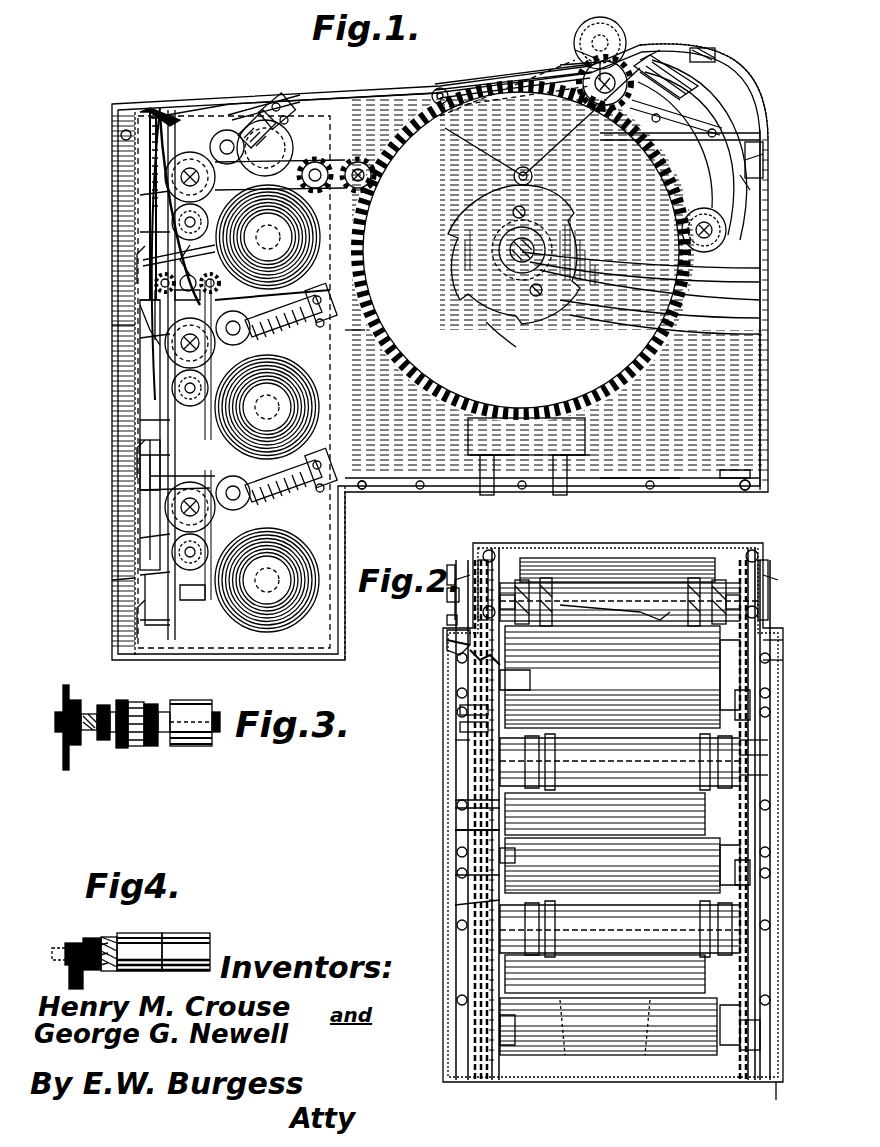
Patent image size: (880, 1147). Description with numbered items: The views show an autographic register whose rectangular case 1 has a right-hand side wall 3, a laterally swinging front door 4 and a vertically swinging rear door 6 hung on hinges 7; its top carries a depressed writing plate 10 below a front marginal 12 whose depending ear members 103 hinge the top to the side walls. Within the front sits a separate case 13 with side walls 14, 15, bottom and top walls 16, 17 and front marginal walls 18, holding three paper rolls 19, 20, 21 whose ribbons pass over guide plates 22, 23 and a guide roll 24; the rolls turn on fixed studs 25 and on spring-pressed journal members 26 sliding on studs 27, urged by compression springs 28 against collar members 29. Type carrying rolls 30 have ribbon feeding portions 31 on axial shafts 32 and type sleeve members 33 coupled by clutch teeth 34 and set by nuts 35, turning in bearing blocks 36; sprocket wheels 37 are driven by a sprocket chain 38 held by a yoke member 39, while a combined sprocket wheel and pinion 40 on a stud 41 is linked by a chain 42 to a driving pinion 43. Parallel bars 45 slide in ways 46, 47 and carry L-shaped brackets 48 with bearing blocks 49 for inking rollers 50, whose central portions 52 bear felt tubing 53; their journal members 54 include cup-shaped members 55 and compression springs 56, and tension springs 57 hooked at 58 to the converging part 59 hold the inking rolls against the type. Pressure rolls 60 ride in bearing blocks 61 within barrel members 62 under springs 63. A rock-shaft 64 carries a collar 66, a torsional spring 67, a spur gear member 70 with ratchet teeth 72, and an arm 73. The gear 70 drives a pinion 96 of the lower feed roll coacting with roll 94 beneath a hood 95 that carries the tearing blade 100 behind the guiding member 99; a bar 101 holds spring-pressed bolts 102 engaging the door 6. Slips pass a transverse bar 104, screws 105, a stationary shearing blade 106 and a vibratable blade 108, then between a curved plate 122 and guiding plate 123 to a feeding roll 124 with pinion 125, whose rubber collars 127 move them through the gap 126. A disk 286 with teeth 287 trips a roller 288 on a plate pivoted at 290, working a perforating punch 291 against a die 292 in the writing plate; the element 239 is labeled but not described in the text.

In FIG. 1, the rectangular case 1 is at (428, 490).
In FIG. 1, the right-hand side wall 3 is at (645, 482).
In FIG. 1, the laterally swinging door 4 is at (112, 326).
In FIG. 1, the vertically swinging door 6 is at (762, 170).
In FIG. 1, the hinges 7 is at (762, 492).
In FIG. 1, the writing plate 10 is at (352, 92).
In FIG. 1, the front marginal 12 is at (180, 96).
In FIG. 2, the front marginal 12 is at (566, 1055).
In FIG. 1, the separate case 13 is at (145, 590).
In FIG. 2, the separate case 13 is at (772, 738).
In FIG. 3, the separate case 13 is at (50, 727).
In FIG. 2, the left-hand side wall 14 is at (455, 874).
In FIG. 3, the left-hand side wall 14 is at (230, 720).
In FIG. 2, the right-hand side wall 15 is at (785, 1090).
In FIG. 2, the bottom wall 16 is at (650, 1058).
In FIG. 3, the bottom wall 16 is at (172, 712).
In FIG. 1, the top wall 17 is at (230, 100).
In FIG. 2, the top wall 17 is at (640, 560).
In FIG. 1, the front marginal walls 18 is at (150, 476).
In FIG. 1, the upper paper carrying roll 19 is at (310, 240).
In FIG. 2, the upper paper carrying roll 19 is at (470, 695).
In FIG. 1, the central paper carrying roll 20 is at (325, 360).
In FIG. 2, the central paper carrying roll 20 is at (455, 860).
In FIG. 1, the lower paper carrying roll 21 is at (230, 600).
In FIG. 2, the lower paper carrying roll 21 is at (500, 1030).
In FIG. 1, the guide plate 22 is at (150, 375).
In FIG. 1, the guide plate 23 is at (143, 262).
In FIG. 1, the guide roll 24 is at (158, 100).
In FIG. 2, the fixed studs 25 is at (500, 675).
In FIG. 2, the spring-pressed journal members 26 is at (783, 852).
In FIG. 2, the studs 27 is at (783, 835).
In FIG. 2, the coiled compression springs 28 is at (768, 628).
In FIG. 2, the collar members 29 is at (738, 787).
In FIG. 1, the type carrying rolls 30 is at (165, 177).
In FIG. 2, the type carrying rolls 30 is at (660, 548).
In FIG. 3, the type carrying rolls 30 is at (130, 750).
In FIG. 2, the cylindrical ribbon feeding portions 31 is at (672, 585).
In FIG. 3, the cylindrical ribbon feeding portions 31 is at (200, 748).
In FIG. 1, the axial shafts 32 is at (172, 180).
In FIG. 2, the axial shafts 32 is at (768, 578).
In FIG. 3, the axial shafts 32 is at (90, 745).
In FIG. 1, the type carrying sleeve members 33 is at (138, 192).
In FIG. 2, the type carrying sleeve members 33 is at (700, 580).
In FIG. 3, the type carrying sleeve members 33 is at (140, 702).
In FIG. 2, the clutch teeth 34 is at (665, 620).
In FIG. 2, the securing nuts 35 is at (508, 555).
In FIG. 2, the bearing blocks 36 is at (490, 605).
In FIG. 3, the bearing blocks 36 is at (58, 736).
In FIG. 2, the sprocket wheels 37 is at (455, 575).
In FIG. 1, the sprocket chain 38 is at (140, 455).
In FIG. 2, the sprocket chain 38 is at (455, 740).
In FIG. 1, the yoke member 39 is at (200, 290).
In FIG. 2, the yoke member 39 is at (460, 710).
In FIG. 1, the combined sprocket wheel and pinion 40 is at (312, 158).
In FIG. 2, the combined sprocket wheel and pinion 40 is at (772, 773).
In FIG. 1, the stud 41 is at (290, 135).
In FIG. 1, the chain 42 is at (258, 110).
In FIG. 2, the chain 42 is at (455, 592).
In FIG. 1, the driving pinion 43 is at (360, 160).
In FIG. 1, the parallel bars 45 is at (112, 580).
In FIG. 2, the parallel bars 45 is at (455, 903).
In FIG. 1, the ways 46 is at (140, 575).
In FIG. 1, the ways 47 is at (140, 300).
In FIG. 1, the L-shaped bracket members 48 is at (140, 258).
In FIG. 1, the bearing blocks 49 is at (140, 232).
In FIG. 2, the bearing blocks 49 is at (447, 645).
In FIG. 4, the bearing blocks 49 is at (70, 945).
In FIG. 1, the inking rollers 50 is at (150, 395).
In FIG. 2, the inking rollers 50 is at (470, 880).
In FIG. 4, the inking rollers 50 is at (200, 936).
In FIG. 2, the central portions 52 is at (455, 800).
In FIG. 2, the felt tubing 53 is at (548, 582).
In FIG. 4, the felt tubing 53 is at (155, 935).
In FIG. 2, the journal members 54 is at (455, 838).
In FIG. 4, the journal members 54 is at (92, 940).
In FIG. 2, the cup-shaped members 55 is at (447, 620).
In FIG. 4, the cup-shaped members 55 is at (122, 940).
In FIG. 2, the coiled compression springs 56 is at (465, 640).
In FIG. 4, the coiled compression springs 56 is at (84, 980).
In FIG. 1, the tension springs 57 is at (130, 112).
In FIG. 2, the tension springs 57 is at (472, 572).
In FIG. 1, the hooks 58 is at (150, 108).
In FIG. 2, the hooks 58 is at (489, 550).
In FIG. 1, the converging part 59 is at (162, 220).
In FIG. 2, the converging part 59 is at (470, 655).
In FIG. 1, the pressure rolls 60 is at (250, 160).
In FIG. 2, the pressure rolls 60 is at (640, 545).
In FIG. 1, the bearing blocks 61 is at (330, 290).
In FIG. 1, the barrel members 62 is at (250, 110).
In FIG. 2, the barrel members 62 is at (765, 545).
In FIG. 1, the coiled compression springs 63 is at (235, 118).
In FIG. 1, the rock-shaft 64 is at (760, 274).
In FIG. 1, the collar 66 is at (760, 326).
In FIG. 1, the torsional spring 67 is at (760, 310).
In FIG. 1, the spur gear member 70 is at (365, 489).
In FIG. 1, the ratchet teeth 72 is at (540, 460).
In FIG. 2, the arm 73 is at (455, 830).
In FIG. 1, the feed roll 94 is at (622, 62).
In FIG. 1, the hood 95 is at (590, 35).
In FIG. 1, the pinion 96 is at (604, 30).
In FIG. 1, the paper guiding member 99 is at (668, 62).
In FIG. 1, the paper tearing blade 100 is at (655, 52).
In FIG. 1, the transversely disposed bar 101 is at (735, 52).
In FIG. 1, the spring-pressed bolts 102 is at (705, 48).
In FIG. 1, the depending ear members 103 is at (112, 135).
In FIG. 1, the transverse bar 104 is at (700, 75).
In FIG. 1, the screws 105 is at (728, 100).
In FIG. 1, the stationary shearing blade 106 is at (712, 85).
In FIG. 1, the vibratable shearing blade 108 is at (740, 112).
In FIG. 1, the curved plate 122 is at (748, 134).
In FIG. 1, the lower supplemental guiding plate 123 is at (762, 150).
In FIG. 1, the record slip feeding roll 124 is at (440, 86).
In FIG. 1, the pinion 125 is at (726, 230).
In FIG. 1, the gap 126 is at (748, 192).
In FIG. 1, the collars 127 is at (760, 256).
In FIG. 1, the disk 286 is at (760, 292).
In FIG. 1, the teeth 287 is at (495, 320).
In FIG. 1, the roller 288 is at (510, 186).
In FIG. 1, the pivot 290 is at (455, 85).
In FIG. 1, the perforating punch 291 is at (500, 90).
In FIG. 1, the die 292 is at (562, 60).
In FIG. 1, the guide 239 is at (475, 92).